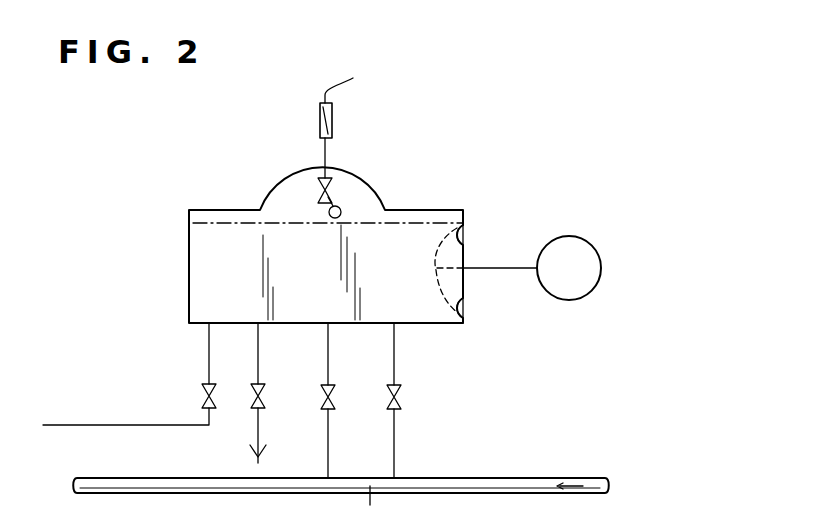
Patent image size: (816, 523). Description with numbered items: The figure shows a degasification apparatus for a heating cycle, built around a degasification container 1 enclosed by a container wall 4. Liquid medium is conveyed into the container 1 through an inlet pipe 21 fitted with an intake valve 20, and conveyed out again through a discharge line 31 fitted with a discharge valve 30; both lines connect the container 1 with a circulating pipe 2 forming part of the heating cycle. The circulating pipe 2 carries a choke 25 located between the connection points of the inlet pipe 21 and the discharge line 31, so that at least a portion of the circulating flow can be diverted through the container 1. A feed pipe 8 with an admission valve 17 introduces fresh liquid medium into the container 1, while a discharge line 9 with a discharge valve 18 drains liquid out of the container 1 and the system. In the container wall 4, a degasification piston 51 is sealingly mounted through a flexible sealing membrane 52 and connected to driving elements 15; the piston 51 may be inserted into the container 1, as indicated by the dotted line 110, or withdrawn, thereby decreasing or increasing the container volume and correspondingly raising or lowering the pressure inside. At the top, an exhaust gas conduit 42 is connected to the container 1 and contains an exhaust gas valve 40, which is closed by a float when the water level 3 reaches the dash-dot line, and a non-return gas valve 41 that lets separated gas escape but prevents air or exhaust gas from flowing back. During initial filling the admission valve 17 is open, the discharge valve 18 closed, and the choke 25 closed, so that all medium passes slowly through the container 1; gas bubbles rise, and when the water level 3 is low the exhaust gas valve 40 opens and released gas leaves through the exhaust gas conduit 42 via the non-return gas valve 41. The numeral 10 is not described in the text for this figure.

The degasification container 1 is at (434, 203).
The circulating pipe 2 is at (510, 495).
The water level 3 is at (228, 218).
The container wall 4 is at (463, 212).
The feed pipe 8 is at (110, 420).
The discharge line 9 is at (265, 457).
The pipe section 10 is at (324, 518).
The driving elements 15 is at (584, 250).
The admission valve 17 is at (202, 398).
The discharge valve 18 is at (265, 398).
The intake valve 20 is at (402, 398).
The inlet pipe 21 is at (395, 353).
The choke 25 is at (384, 504).
The discharge valve 30 is at (335, 398).
The discharge line 31 is at (328, 353).
The exhaust gas valve 40 is at (334, 186).
The non-return gas valve 41 is at (332, 116).
The exhaust gas conduit 42 is at (349, 77).
The degasification piston 51 is at (463, 280).
The flexible sealing membrane 52 is at (460, 307).
The dotted line 110 is at (437, 288).